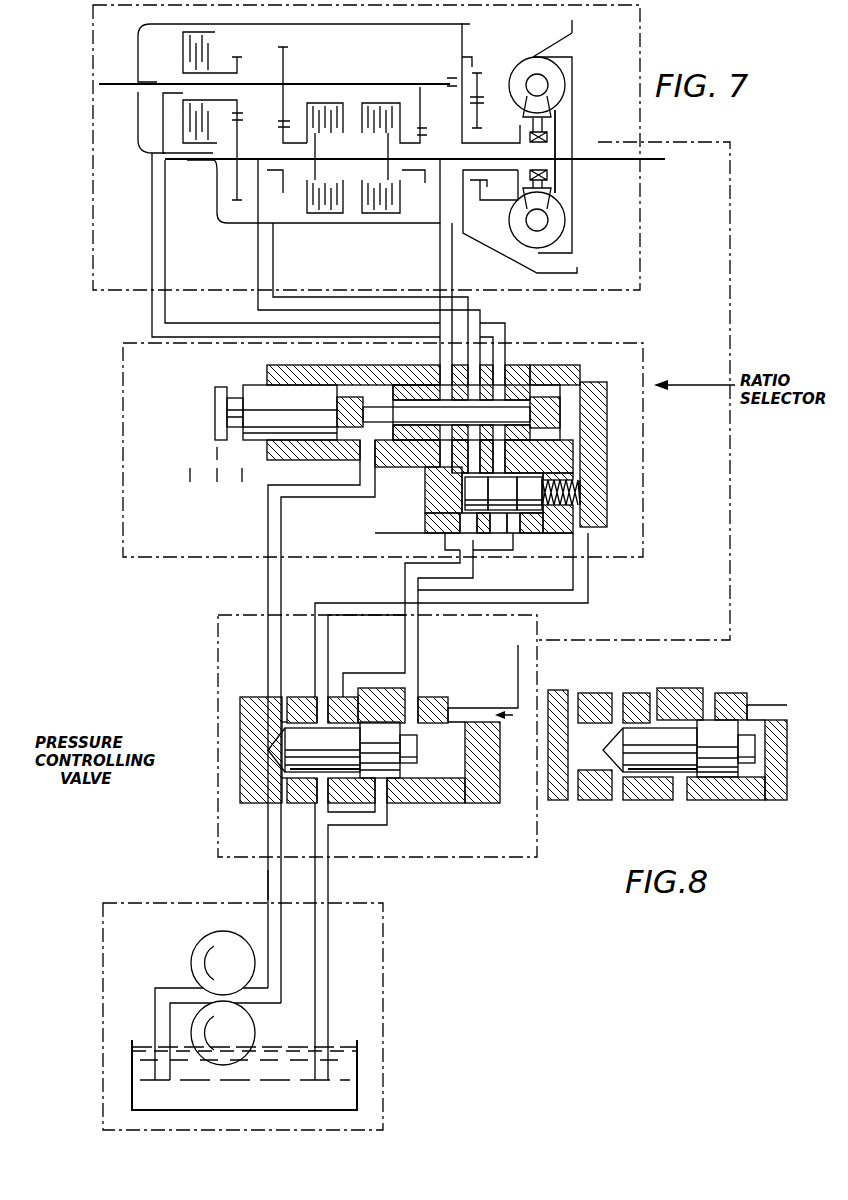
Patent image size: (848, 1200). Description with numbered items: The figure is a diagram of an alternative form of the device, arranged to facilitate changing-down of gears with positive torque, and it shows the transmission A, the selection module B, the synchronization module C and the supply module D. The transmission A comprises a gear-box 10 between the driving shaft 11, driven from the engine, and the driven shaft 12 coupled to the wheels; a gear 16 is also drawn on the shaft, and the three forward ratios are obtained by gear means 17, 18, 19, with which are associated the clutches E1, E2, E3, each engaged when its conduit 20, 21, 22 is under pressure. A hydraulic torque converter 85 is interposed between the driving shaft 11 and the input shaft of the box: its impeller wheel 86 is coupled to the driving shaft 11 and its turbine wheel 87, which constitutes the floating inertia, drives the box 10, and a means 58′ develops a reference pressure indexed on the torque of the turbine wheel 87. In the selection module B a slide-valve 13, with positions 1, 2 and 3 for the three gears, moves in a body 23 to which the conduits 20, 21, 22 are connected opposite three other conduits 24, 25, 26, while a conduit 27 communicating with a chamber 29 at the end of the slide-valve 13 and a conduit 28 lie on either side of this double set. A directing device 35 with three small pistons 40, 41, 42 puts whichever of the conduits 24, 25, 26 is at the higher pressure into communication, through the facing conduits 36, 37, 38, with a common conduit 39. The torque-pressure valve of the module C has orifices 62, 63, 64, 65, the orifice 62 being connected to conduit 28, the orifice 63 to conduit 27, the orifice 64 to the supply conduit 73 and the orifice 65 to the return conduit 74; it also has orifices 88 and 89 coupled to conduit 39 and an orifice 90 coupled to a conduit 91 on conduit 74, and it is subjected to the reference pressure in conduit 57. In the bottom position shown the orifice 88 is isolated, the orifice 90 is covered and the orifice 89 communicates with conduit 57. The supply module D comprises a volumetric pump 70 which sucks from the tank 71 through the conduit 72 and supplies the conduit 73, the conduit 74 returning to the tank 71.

In FIG. 7, the gear-box 10 is at (138, 58).
In FIG. 7, the driven shaft 12 is at (118, 87).
In FIG. 7, the driving shaft 11 is at (610, 160).
In FIG. 7, the clutch E3 is at (217, 40).
In FIG. 7, the clutch E2 is at (330, 214).
In FIG. 7, the clutch E1 is at (386, 214).
In FIG. 7, the gear means 19 is at (240, 118).
In FIG. 7, the gear means 18 is at (282, 120).
In FIG. 7, the gear 16 is at (473, 80).
In FIG. 7, the gear means 17 is at (424, 133).
In FIG. 7, the impeller wheel 86 is at (518, 76).
In FIG. 7, the turbine wheel 87 is at (556, 80).
In FIG. 7, the hydraulic torque converter 85 is at (565, 92).
In FIG. 7, the means developing reference pressure 58′ is at (570, 138).
In FIG. 7, the conduit 20 is at (452, 272).
In FIG. 7, the conduit 21 is at (481, 325).
In FIG. 7, the conduit 22 is at (506, 352).
In FIG. 7, the slide-valve 13 is at (262, 395).
In FIG. 7, the position of slide-valve 1 is at (189, 490).
In FIG. 7, the position of slide-valve 2 is at (216, 479).
In FIG. 7, the position of slide-valve 3 is at (241, 490).
In FIG. 7, the body 23 is at (596, 374).
In FIG. 7, the chamber 29 is at (575, 413).
In FIG. 7, the conduit 27 is at (580, 452).
In FIG. 7, the conduit 24 is at (446, 463).
In FIG. 7, the conduit 25 is at (471, 466).
In FIG. 7, the conduit 26 is at (485, 470).
In FIG. 7, the directing device 35 is at (465, 515).
In FIG. 7, the small piston 40 is at (476, 493).
In FIG. 7, the small piston 41 is at (502, 493).
In FIG. 7, the small piston 42 is at (529, 493).
In FIG. 7, the conduit 36 is at (468, 535).
In FIG. 7, the conduit 37 is at (497, 535).
In FIG. 7, the conduit 38 is at (515, 535).
In FIG. 7, the conduit 28 is at (266, 586).
In FIG. 7, the common conduit 39 is at (415, 640).
In FIG. 7, the orifice 62 is at (280, 720).
In FIG. 8, the orifice 62 is at (574, 715).
In FIG. 7, the orifice 63 is at (318, 720).
In FIG. 8, the orifice 63 is at (620, 715).
In FIG. 7, the orifice 64 is at (280, 782).
In FIG. 8, the orifice 64 is at (573, 800).
In FIG. 7, the orifice 65 is at (318, 782).
In FIG. 8, the orifice 65 is at (618, 800).
In FIG. 7, the orifice 88 is at (352, 720).
In FIG. 8, the orifice 88 is at (655, 715).
In FIG. 7, the orifice 89 is at (420, 718).
In FIG. 8, the orifice 89 is at (712, 715).
In FIG. 7, the conduit 57 is at (500, 705).
In FIG. 8, the conduit 57 is at (770, 705).
In FIG. 7, the orifice 90 is at (381, 784).
In FIG. 8, the orifice 90 is at (678, 800).
In FIG. 7, the conduit 91 is at (365, 827).
In FIG. 7, the conduit 73 is at (266, 882).
In FIG. 7, the conduit 74 is at (330, 882).
In FIG. 7, the volumetric pump 70 is at (196, 955).
In FIG. 7, the tank 71 is at (357, 1047).
In FIG. 7, the conduit 72 is at (154, 1005).
In FIG. 7, the transmission A is at (94, 152).
In FIG. 7, the selection module B is at (108, 444).
In FIG. 7, the synchronization module C is at (216, 746).
In FIG. 7, the supply module D is at (98, 1002).